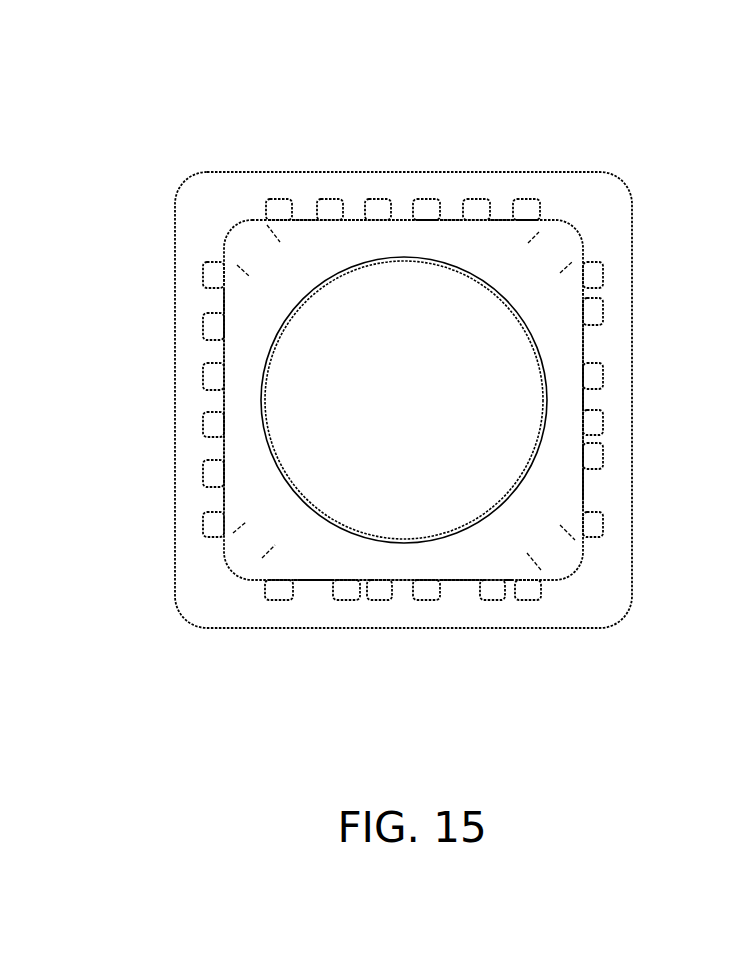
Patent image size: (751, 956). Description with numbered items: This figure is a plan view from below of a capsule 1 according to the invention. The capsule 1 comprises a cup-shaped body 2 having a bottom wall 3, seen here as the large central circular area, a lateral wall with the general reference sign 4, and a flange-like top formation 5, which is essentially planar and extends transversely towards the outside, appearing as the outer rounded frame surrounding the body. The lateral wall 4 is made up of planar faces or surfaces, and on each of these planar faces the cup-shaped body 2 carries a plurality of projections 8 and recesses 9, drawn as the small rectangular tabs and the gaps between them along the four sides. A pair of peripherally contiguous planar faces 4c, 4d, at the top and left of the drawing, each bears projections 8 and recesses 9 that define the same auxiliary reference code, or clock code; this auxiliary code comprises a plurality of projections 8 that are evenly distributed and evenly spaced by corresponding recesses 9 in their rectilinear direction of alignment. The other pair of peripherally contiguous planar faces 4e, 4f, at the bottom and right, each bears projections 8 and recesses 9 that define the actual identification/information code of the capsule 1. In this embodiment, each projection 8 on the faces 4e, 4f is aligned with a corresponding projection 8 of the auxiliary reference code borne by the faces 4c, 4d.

The capsule 1 is at (641, 205).
The cup-shaped body 2 is at (226, 570).
The bottom wall 3 is at (486, 318).
The lateral wall 4 is at (277, 535).
The planar face 4c is at (402, 212).
The planar face 4d is at (212, 400).
The planar face 4e is at (400, 590).
The planar face 4f is at (590, 345).
The flange-like top formation 5 is at (205, 200).
The projections 8 is at (278, 208).
The recesses 9 is at (308, 215).